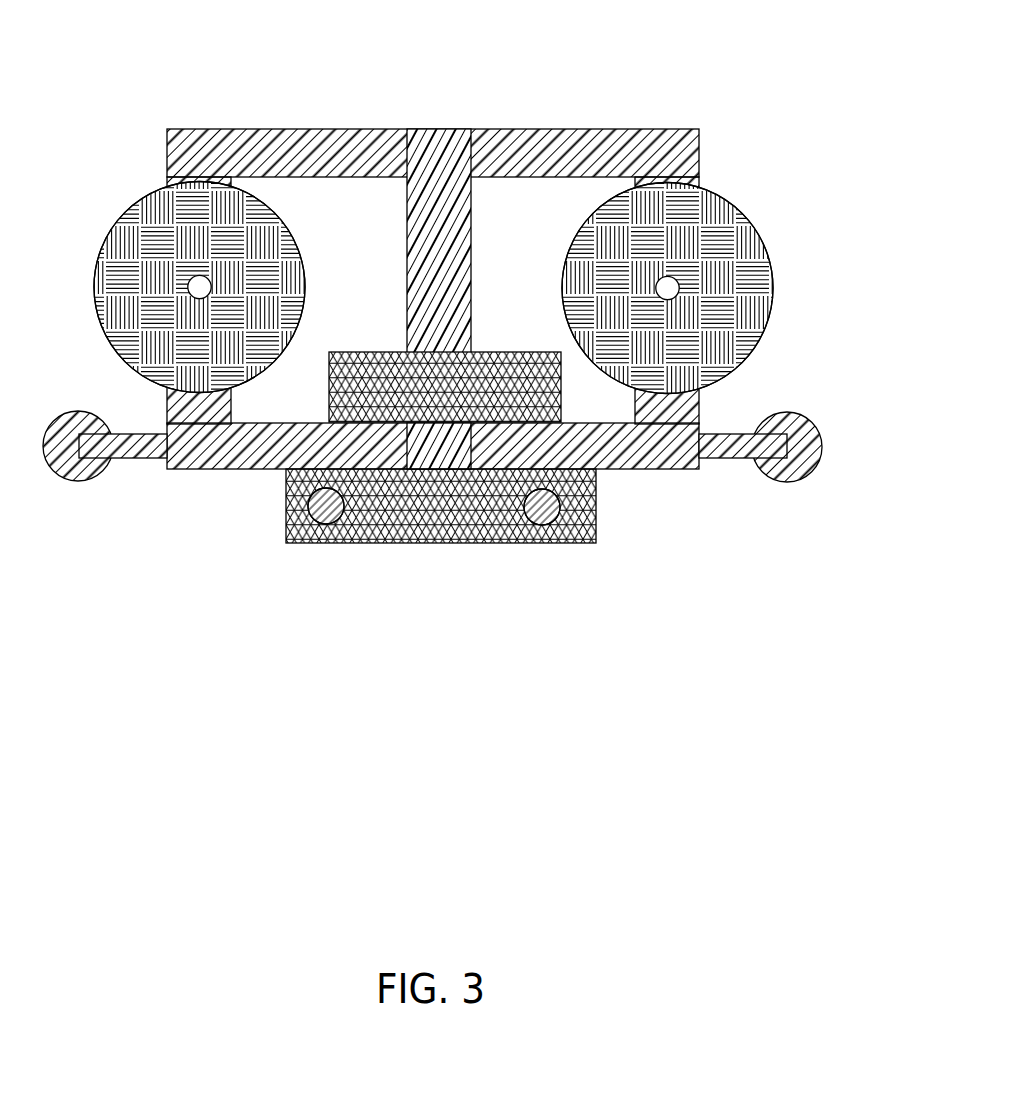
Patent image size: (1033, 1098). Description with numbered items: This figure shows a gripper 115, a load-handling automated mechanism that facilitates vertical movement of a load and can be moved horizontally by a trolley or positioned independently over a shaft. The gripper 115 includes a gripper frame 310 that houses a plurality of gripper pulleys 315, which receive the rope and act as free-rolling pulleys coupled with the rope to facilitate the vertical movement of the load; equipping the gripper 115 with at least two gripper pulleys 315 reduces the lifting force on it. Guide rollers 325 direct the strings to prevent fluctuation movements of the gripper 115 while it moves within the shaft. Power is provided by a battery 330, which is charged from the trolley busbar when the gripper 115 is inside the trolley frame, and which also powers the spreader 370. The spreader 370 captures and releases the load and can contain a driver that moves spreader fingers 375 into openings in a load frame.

The gripper 115 is at (465, 316).
The gripper frame 310 is at (678, 152).
The gripper pulleys 315 is at (127, 268).
The guide rollers 325 is at (802, 449).
The battery 330 is at (378, 395).
The spreader 370 is at (583, 512).
The spreader fingers 375 is at (540, 512).